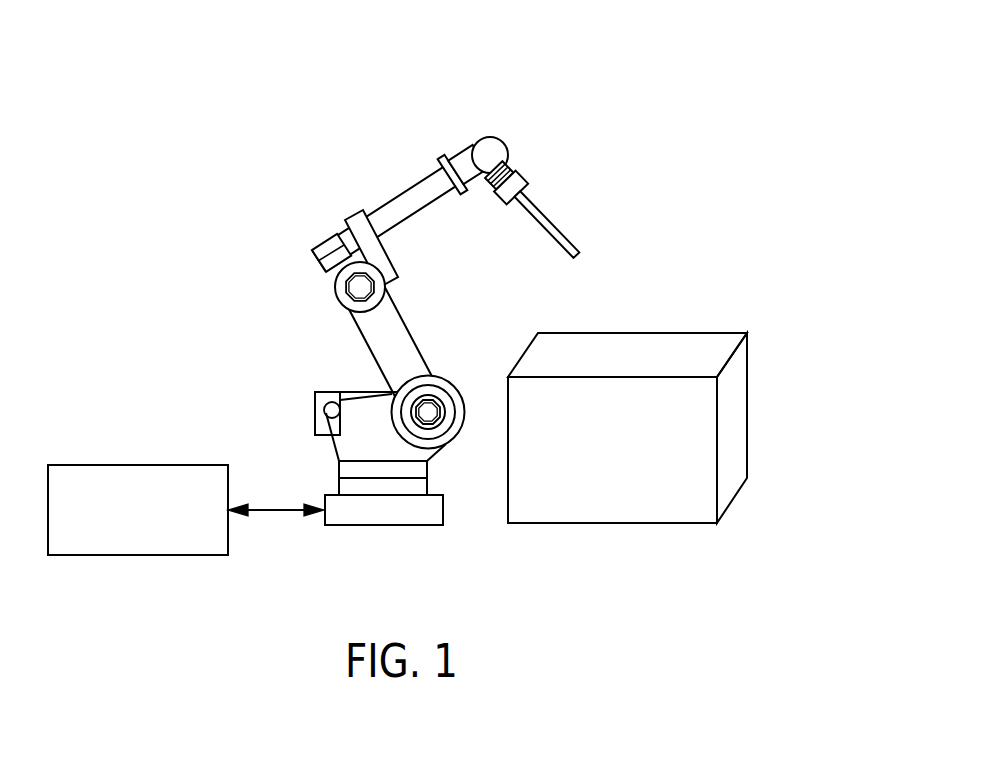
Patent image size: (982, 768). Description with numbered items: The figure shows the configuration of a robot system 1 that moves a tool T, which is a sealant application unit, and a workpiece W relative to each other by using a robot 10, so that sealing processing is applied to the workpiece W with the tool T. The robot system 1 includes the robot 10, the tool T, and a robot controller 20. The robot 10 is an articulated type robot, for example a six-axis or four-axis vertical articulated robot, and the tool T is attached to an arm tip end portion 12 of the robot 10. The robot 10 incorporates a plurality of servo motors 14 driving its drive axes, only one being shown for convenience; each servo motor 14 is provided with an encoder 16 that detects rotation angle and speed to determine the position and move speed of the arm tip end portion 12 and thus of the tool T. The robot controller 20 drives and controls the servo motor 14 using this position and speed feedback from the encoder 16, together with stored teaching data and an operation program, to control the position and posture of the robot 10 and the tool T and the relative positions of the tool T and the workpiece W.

The robot system 1 is at (363, 284).
The robot 10 is at (452, 314).
The arm tip end portion 12 is at (512, 160).
The servo motor 14 is at (446, 377).
The encoder 16 is at (428, 403).
The robot controller 20 is at (183, 463).
The tool T is at (562, 210).
The workpiece W is at (717, 332).